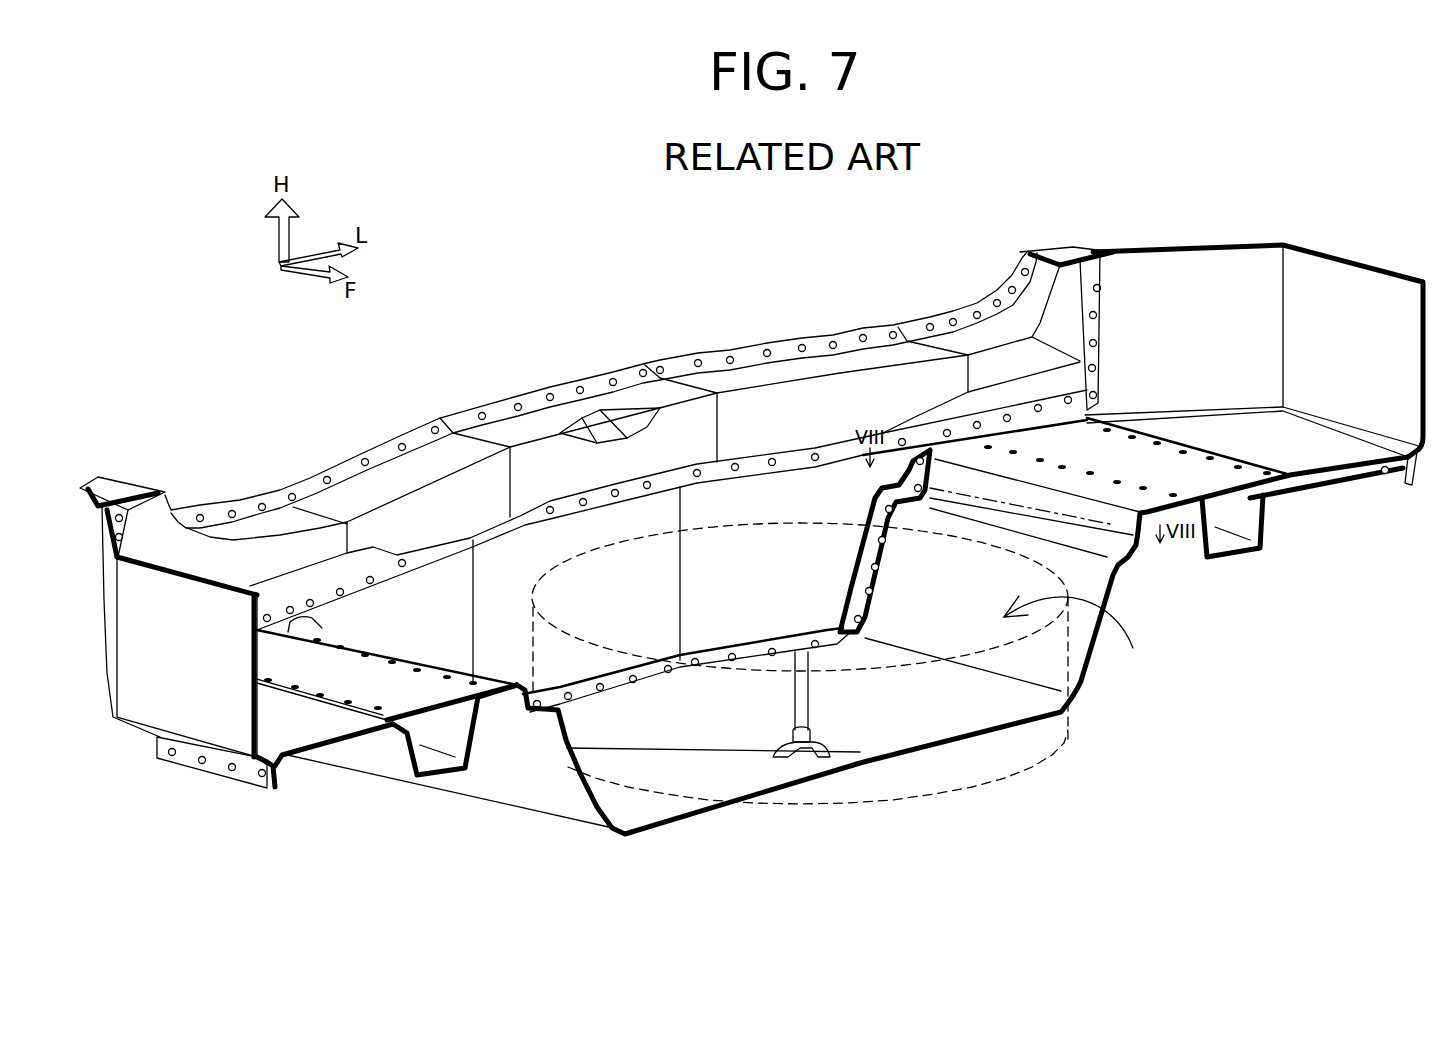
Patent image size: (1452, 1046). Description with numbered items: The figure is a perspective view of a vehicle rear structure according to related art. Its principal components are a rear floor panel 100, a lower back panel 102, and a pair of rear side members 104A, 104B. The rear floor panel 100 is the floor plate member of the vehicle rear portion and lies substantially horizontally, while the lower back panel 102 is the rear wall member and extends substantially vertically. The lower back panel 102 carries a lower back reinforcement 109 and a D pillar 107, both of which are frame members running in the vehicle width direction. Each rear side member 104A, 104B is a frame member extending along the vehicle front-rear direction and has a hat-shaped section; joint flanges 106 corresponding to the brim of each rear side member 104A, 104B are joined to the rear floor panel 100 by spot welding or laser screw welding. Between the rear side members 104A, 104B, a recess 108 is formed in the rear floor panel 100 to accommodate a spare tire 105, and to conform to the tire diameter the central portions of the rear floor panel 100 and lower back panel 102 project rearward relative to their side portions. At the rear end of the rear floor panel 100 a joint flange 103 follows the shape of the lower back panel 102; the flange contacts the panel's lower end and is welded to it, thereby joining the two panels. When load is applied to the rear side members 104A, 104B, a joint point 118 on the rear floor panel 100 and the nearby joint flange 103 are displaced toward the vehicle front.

The rear floor panel 100 is at (992, 712).
The lower back panel 102 is at (803, 493).
The joint flange 103 is at (913, 445).
The rear side member 104A is at (1193, 547).
The rear side member 104B is at (400, 765).
The spare tire 105 is at (907, 800).
The joint flange 106 is at (393, 740).
The D pillar 107 is at (127, 493).
The recess 108 is at (1096, 641).
The lower back reinforcement 109 is at (540, 457).
The joint point 118 is at (388, 658).